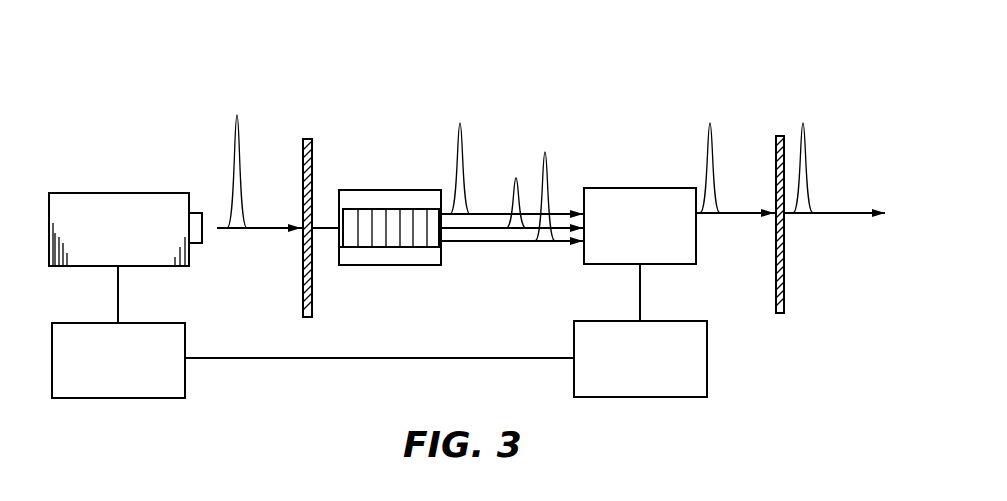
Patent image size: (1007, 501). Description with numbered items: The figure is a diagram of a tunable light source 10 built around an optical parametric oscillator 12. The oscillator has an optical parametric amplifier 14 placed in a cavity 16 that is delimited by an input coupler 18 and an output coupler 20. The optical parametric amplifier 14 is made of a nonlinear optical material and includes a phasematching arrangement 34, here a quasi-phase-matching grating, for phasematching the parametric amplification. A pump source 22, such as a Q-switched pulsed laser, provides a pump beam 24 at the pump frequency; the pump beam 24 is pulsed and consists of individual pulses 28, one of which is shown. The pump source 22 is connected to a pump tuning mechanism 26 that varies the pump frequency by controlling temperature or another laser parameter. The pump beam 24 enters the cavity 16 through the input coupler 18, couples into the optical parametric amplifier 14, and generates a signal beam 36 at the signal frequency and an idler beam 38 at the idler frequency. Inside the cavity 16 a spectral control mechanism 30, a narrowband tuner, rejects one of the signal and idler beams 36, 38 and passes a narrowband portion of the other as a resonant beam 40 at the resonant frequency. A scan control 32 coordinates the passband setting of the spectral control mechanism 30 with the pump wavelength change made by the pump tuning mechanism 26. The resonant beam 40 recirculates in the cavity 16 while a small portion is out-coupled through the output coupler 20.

The tunable light source 10 is at (612, 56).
The optical parametric oscillator 12 is at (304, 78).
The optical parametric amplifier 14 is at (388, 190).
The cavity 16 is at (380, 85).
The input coupler 18 is at (312, 148).
The output coupler 20 is at (781, 315).
The pump source 22 is at (145, 193).
The pump beam 24 is at (260, 230).
The pump tuning mechanism 26 is at (185, 387).
The pulse 28 is at (233, 130).
The spectral control mechanism 30 is at (638, 188).
The scan control 32 is at (574, 325).
The phasematching arrangement 34 is at (393, 248).
The signal beam 36 is at (483, 214).
The idler beam 38 is at (527, 243).
The resonant beam 40 is at (741, 218).